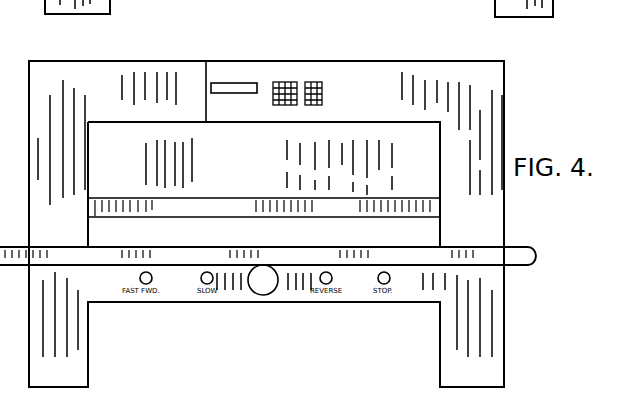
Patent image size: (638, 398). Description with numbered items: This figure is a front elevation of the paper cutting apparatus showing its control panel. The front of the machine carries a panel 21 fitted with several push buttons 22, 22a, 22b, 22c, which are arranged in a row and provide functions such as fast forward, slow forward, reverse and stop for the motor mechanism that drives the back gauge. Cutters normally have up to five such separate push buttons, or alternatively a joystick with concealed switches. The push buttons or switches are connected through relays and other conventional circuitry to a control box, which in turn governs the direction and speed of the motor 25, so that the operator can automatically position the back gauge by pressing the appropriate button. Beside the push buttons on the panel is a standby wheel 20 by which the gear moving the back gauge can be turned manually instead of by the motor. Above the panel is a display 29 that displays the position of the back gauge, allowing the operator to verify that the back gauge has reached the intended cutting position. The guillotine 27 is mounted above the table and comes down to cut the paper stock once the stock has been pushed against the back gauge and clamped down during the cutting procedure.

The motor 25 is at (562, 0).
The display 29 is at (237, 83).
The guillotine 27 is at (276, 180).
The push button 22 is at (140, 277).
The push button 22a is at (201, 277).
The standby wheel 20 is at (267, 296).
The panel 21 is at (303, 294).
The push button 22b is at (332, 277).
The push button 22c is at (390, 277).